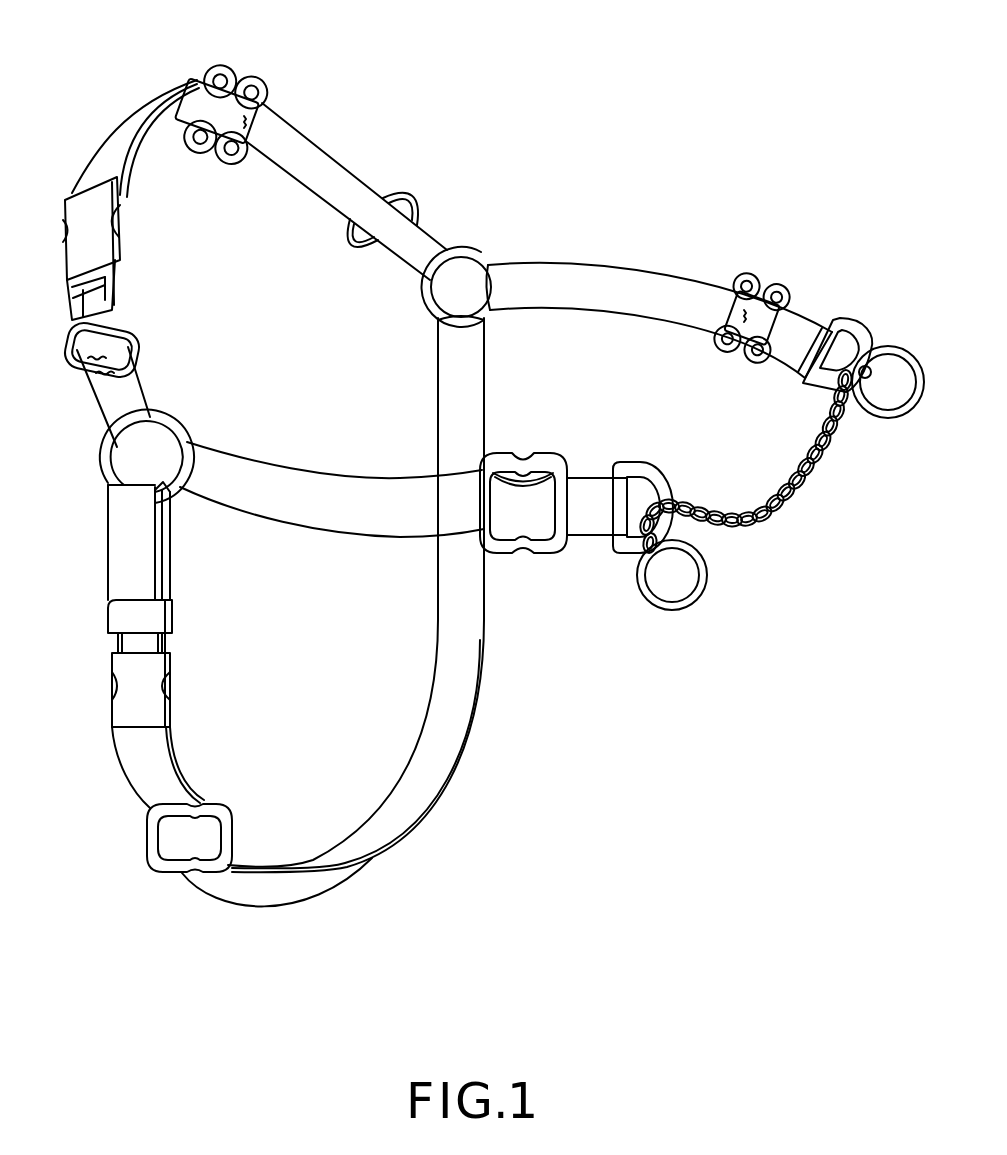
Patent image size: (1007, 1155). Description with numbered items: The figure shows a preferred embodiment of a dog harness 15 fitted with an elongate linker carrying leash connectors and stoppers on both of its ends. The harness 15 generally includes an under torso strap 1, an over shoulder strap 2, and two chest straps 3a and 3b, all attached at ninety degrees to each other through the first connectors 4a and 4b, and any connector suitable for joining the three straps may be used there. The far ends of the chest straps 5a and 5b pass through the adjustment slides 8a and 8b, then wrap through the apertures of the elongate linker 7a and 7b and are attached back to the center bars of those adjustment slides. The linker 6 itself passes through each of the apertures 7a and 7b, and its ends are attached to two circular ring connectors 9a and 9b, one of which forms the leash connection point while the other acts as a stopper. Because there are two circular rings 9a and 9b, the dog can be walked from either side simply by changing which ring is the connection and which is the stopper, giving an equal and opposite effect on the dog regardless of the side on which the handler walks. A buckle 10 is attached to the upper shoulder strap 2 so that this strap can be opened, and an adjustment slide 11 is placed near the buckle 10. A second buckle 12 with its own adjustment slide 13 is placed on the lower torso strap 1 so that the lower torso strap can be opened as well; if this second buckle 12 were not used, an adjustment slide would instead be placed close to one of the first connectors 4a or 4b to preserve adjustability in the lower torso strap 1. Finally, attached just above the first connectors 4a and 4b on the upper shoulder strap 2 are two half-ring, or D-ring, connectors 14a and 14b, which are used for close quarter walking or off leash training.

The under torso strap 1 is at (420, 818).
The over shoulder strap 2 is at (112, 126).
The chest strap 3a is at (621, 263).
The chest strap 3b is at (328, 472).
The first connector 4a is at (471, 242).
The first connector 4b is at (97, 460).
The far end of chest strap 5a is at (807, 314).
The far end of chest strap 5b is at (593, 538).
The linker 6 is at (779, 530).
The aperture of elongate linker 7a is at (855, 318).
The aperture of elongate linker 7b is at (634, 462).
The adjustment slide 8a is at (741, 266).
The adjustment slide 8b is at (543, 455).
The circular ring connector 9a is at (895, 347).
The circular ring connector 9b is at (692, 610).
The buckle 10 is at (124, 245).
The adjustment slide 11 is at (250, 78).
The second buckle 12 is at (175, 662).
The adjustment slide 13 is at (230, 810).
The half-ring (D-ring) connector 14a is at (400, 182).
The half-ring (D-ring) connector 14b is at (138, 336).
The harness 15 is at (584, 710).